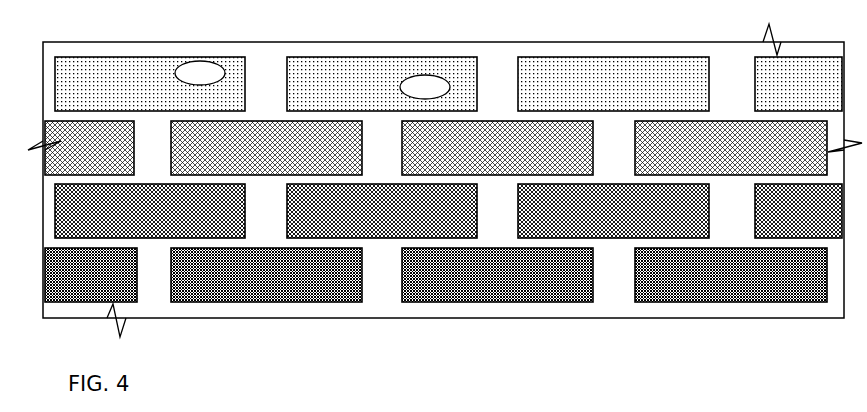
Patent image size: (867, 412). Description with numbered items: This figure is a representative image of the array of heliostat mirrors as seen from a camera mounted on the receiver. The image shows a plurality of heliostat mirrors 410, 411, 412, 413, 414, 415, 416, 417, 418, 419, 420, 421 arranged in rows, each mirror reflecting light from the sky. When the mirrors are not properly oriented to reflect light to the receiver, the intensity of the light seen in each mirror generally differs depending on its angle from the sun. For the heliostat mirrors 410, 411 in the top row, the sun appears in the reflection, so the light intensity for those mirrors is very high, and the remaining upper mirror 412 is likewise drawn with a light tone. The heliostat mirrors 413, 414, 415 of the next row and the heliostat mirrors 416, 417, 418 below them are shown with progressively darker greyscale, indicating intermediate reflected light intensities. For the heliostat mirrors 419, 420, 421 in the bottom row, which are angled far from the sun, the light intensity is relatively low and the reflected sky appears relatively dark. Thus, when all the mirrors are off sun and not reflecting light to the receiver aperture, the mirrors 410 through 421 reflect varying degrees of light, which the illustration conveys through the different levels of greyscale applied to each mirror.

The heliostat mirror 410 is at (152, 72).
The heliostat mirror 411 is at (350, 75).
The heliostat mirror 412 is at (605, 72).
The heliostat mirror 413 is at (267, 119).
The heliostat mirror 414 is at (500, 119).
The heliostat mirror 415 is at (738, 119).
The heliostat mirror 416 is at (147, 240).
The heliostat mirror 417 is at (390, 240).
The heliostat mirror 418 is at (616, 239).
The heliostat mirror 419 is at (300, 304).
The heliostat mirror 420 is at (520, 304).
The heliostat mirror 421 is at (730, 304).